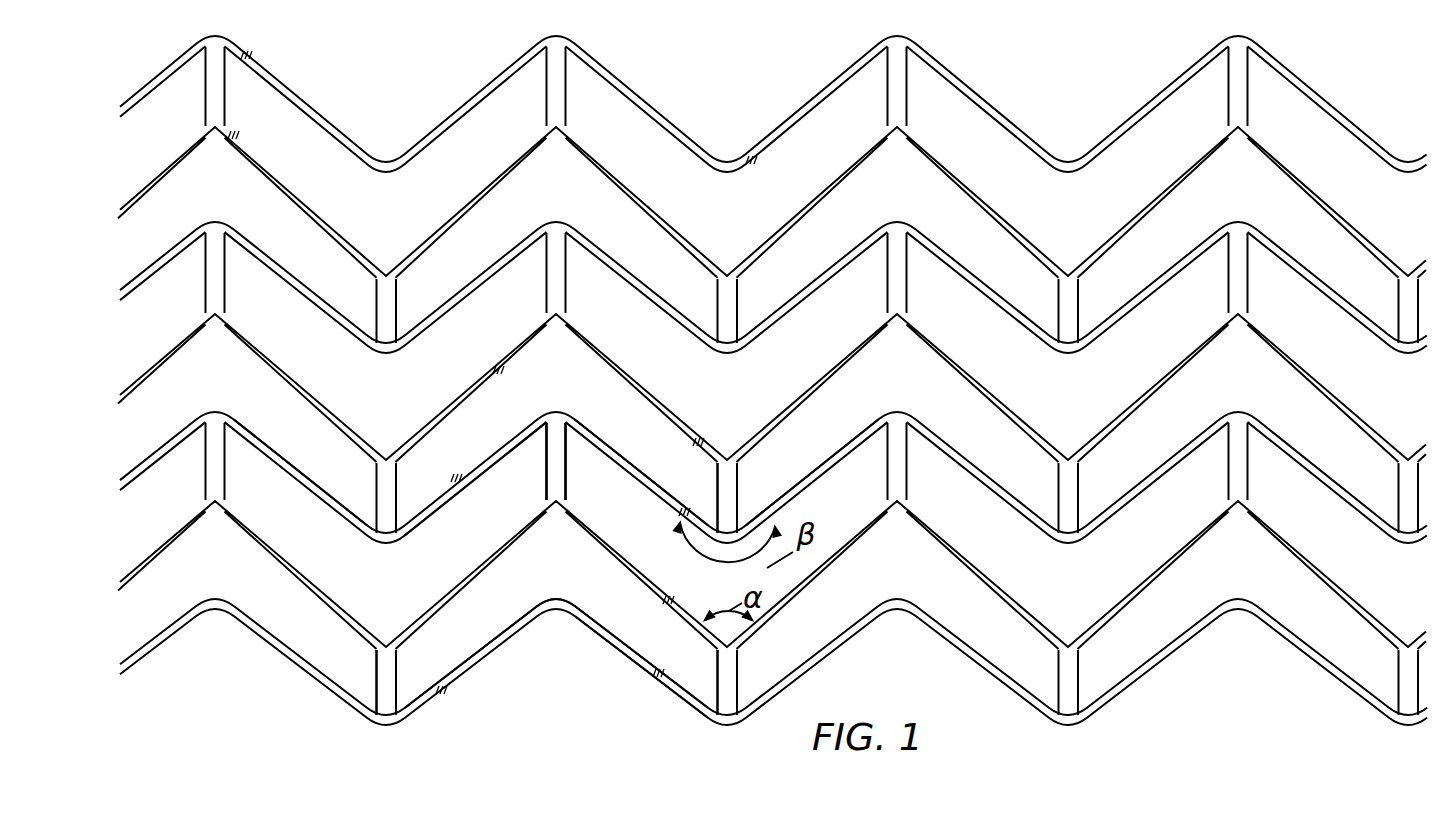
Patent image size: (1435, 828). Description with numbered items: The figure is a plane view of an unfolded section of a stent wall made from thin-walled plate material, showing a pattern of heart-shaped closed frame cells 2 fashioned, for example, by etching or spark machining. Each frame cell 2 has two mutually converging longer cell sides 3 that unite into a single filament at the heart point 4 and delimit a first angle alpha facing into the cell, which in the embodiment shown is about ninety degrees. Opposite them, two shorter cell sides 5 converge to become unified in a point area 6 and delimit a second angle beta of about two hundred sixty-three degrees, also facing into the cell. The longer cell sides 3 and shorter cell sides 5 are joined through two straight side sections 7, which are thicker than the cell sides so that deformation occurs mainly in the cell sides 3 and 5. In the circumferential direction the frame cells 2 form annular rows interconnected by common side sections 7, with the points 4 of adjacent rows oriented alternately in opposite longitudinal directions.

The frame cell 2 is at (562, 195).
The longer cell side 3 is at (470, 578).
The heart point 4 is at (557, 503).
The shorter cell side 5 is at (662, 490).
The point area 6 is at (543, 598).
The side section 7 is at (547, 478).